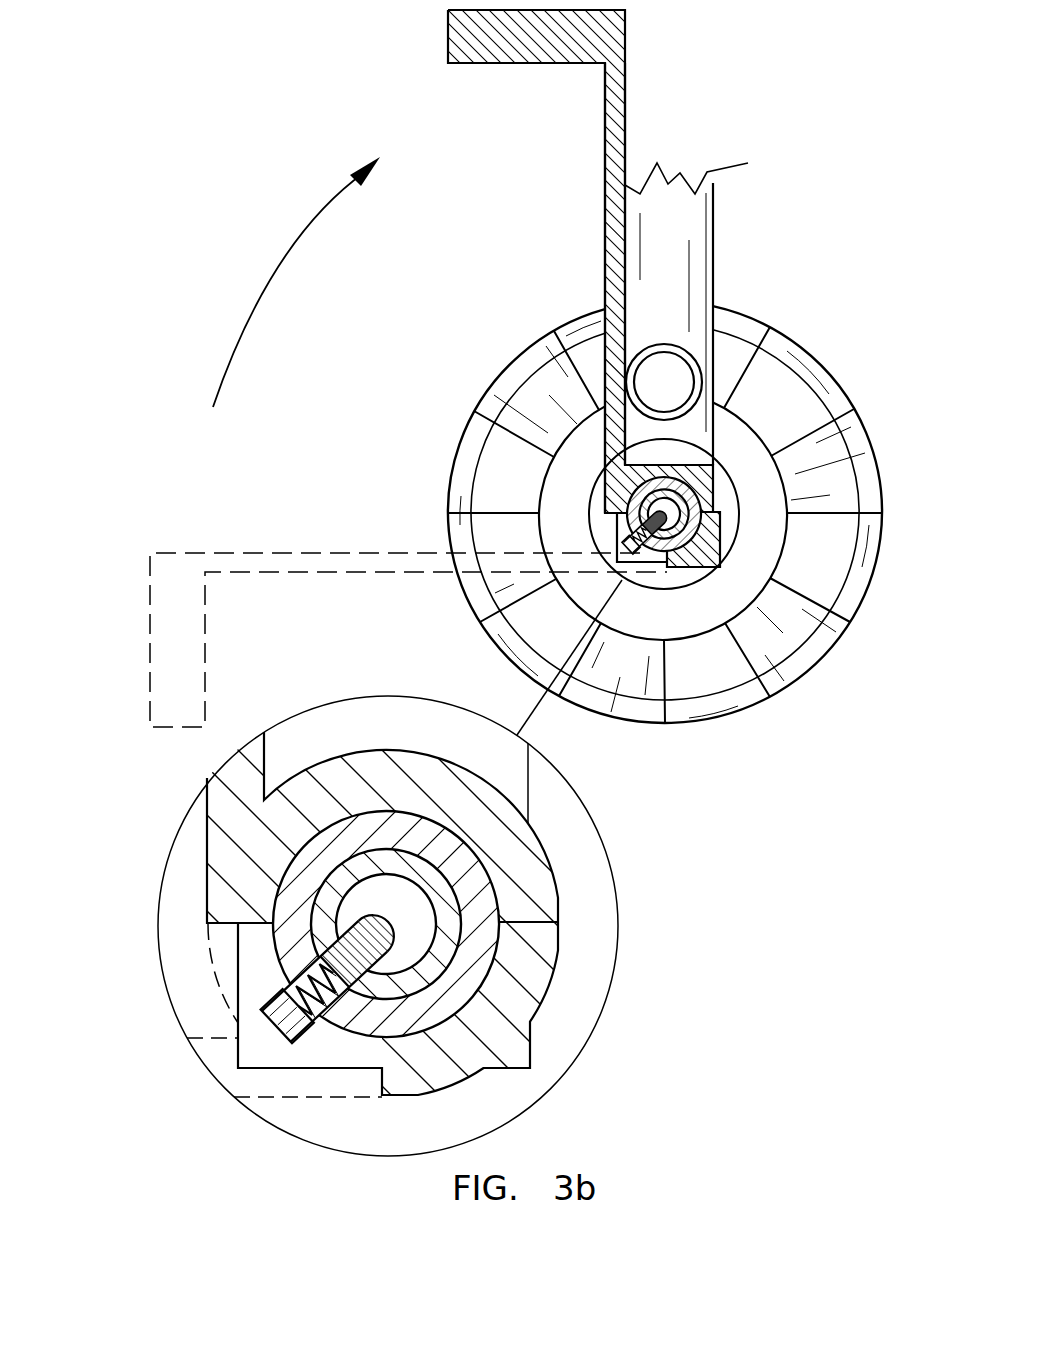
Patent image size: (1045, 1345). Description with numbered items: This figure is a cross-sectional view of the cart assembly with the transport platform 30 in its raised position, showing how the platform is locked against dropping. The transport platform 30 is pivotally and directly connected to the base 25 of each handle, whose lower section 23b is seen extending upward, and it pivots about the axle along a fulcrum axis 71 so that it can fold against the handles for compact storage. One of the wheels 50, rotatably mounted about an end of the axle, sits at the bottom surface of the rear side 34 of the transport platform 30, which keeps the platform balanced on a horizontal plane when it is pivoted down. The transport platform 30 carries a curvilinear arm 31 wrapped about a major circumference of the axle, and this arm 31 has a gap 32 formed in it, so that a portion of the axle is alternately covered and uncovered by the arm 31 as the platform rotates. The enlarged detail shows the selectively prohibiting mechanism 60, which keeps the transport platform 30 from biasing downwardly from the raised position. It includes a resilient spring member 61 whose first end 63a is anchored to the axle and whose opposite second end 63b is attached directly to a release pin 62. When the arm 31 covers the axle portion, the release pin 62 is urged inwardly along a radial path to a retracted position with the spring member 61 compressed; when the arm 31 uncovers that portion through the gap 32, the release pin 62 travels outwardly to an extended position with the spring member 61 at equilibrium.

The transport platform 30 is at (448, 38).
The rear side 34 is at (612, 200).
The lower section 23b is at (670, 261).
The base 25 is at (700, 337).
The curvilinear arm 31 is at (710, 489).
The gap 32 is at (617, 530).
The wheel 50 is at (820, 652).
The fulcrum axis 71 is at (260, 287).
The selectively prohibiting mechanism 60 is at (391, 858).
The spring member 61 is at (328, 928).
The release pin 62 is at (300, 1020).
The first end 63a is at (380, 932).
The second end 63b is at (239, 1040).